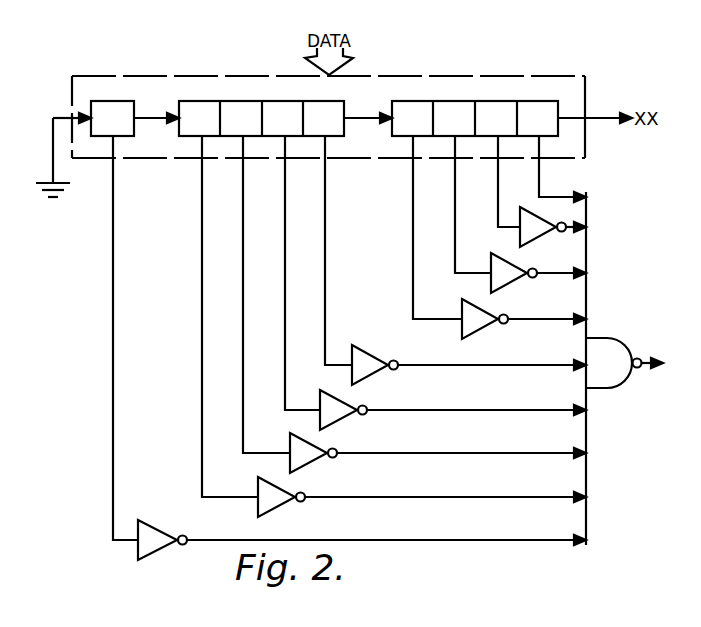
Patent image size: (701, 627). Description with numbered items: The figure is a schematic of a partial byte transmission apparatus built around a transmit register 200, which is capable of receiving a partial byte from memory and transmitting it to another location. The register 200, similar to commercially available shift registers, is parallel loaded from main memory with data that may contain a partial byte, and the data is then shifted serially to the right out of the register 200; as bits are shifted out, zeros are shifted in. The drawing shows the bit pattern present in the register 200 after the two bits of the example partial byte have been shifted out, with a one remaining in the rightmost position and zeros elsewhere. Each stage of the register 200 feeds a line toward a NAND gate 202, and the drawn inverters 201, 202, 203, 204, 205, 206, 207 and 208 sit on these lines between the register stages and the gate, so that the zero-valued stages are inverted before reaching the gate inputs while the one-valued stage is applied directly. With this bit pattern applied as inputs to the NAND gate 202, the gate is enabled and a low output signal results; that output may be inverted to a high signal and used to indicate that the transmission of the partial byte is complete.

The register 200 is at (546, 76).
The inverter 201 is at (524, 207).
The NAND gate 202 is at (497, 262).
The inverter 203 is at (466, 312).
The inverter 204 is at (362, 348).
The inverter 205 is at (322, 400).
The inverter 206 is at (287, 447).
The inverter 207 is at (262, 486).
The inverter 208 is at (148, 518).